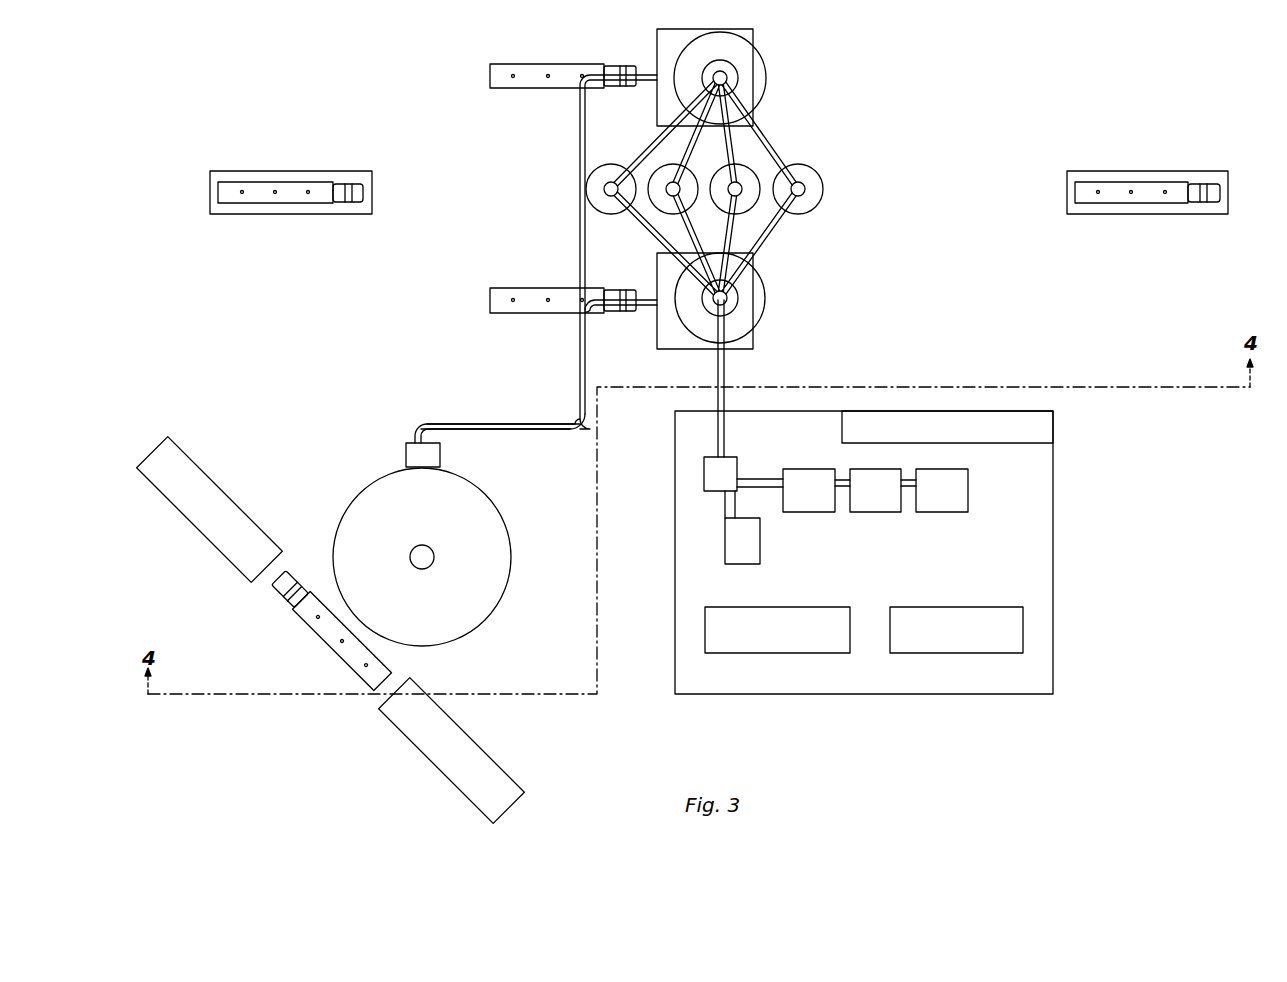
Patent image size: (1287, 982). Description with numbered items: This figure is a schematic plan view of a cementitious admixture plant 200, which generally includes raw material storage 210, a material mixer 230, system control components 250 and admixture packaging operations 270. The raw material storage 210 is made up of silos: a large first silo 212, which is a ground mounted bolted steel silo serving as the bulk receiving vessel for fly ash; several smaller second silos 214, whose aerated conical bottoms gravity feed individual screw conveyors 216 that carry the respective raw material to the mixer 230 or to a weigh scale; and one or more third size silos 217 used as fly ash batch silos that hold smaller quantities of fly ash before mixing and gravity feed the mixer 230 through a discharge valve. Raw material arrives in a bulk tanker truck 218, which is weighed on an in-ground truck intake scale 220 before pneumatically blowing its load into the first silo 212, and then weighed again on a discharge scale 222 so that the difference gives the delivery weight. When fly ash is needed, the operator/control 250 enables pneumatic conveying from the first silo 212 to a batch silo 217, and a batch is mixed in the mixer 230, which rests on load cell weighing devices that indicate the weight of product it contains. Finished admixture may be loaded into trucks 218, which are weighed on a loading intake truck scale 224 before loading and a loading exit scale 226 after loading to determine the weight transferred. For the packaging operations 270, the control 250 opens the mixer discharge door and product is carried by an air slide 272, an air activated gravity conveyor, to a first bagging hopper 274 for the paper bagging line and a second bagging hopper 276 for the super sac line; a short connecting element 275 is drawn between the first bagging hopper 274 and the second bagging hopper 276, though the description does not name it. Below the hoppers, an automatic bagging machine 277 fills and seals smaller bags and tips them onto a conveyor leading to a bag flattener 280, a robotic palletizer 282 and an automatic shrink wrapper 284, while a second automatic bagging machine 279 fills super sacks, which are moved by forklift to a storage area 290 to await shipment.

The admixture plant 200 is at (925, 340).
The raw material storage 210 is at (820, 134).
The first silo 212 is at (397, 520).
The second silo 214 is at (600, 213).
The screw conveyor 216 is at (766, 133).
The third size silo 217 is at (745, 65).
The bulk tanker truck 218 is at (540, 89).
The truck intake scale 220 is at (465, 760).
The discharge scale 222 is at (205, 503).
The loading intake truck scale 224 is at (335, 172).
The loading exit scale 226 is at (1203, 172).
The mixer 230 is at (707, 72).
The system control components 250 is at (1025, 425).
The admixture packaging operations 270 is at (757, 452).
The air slide 272 is at (727, 375).
The first bagging hopper 274 is at (718, 478).
The coupling 275 is at (730, 505).
The second bagging hopper 276 is at (736, 540).
The automatic bagging machine 277 is at (693, 470).
The second automatic bagging machine 279 is at (739, 572).
The bag flattener 280 is at (793, 503).
The robotic palletizer 282 is at (866, 503).
The automatic shrink wrapper 284 is at (935, 503).
The storage area 290 is at (914, 638).